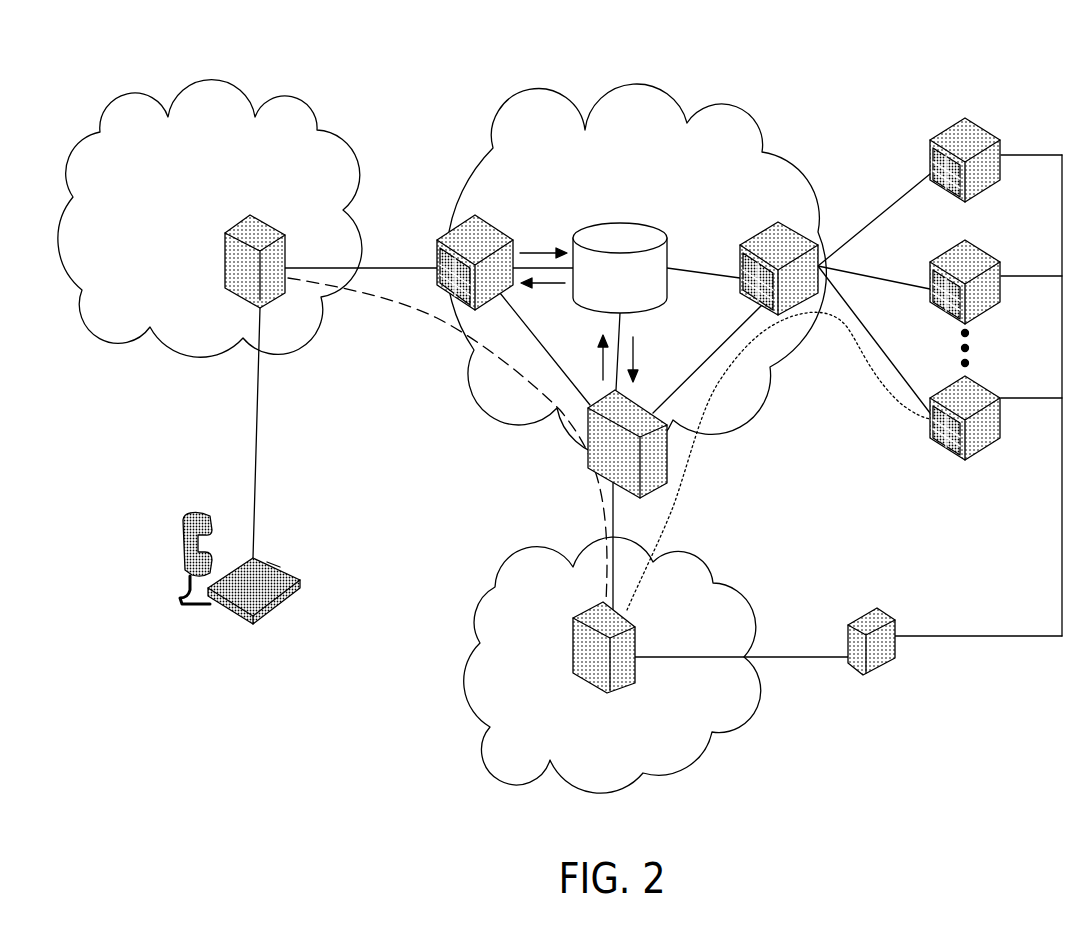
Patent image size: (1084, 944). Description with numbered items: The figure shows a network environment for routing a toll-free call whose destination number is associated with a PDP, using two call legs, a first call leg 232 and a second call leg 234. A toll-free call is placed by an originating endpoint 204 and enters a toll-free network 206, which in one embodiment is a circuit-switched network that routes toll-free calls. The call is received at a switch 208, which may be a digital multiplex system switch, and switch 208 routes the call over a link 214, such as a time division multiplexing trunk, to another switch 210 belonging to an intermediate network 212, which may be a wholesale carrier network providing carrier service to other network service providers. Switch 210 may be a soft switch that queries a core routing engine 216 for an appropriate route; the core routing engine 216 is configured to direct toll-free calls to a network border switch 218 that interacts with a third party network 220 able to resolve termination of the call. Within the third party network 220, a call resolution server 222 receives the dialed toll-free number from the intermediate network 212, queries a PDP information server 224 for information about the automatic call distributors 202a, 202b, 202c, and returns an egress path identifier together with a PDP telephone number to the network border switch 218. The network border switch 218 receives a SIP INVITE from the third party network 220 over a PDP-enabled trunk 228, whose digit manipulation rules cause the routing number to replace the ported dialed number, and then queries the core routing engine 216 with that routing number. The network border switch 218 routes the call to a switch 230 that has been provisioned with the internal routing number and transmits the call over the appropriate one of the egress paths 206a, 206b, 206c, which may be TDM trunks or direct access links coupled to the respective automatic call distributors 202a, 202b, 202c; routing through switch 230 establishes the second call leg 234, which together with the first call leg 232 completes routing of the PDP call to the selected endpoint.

The automatic call distributor 202a is at (952, 121).
The automatic call distributor 202b is at (1001, 252).
The automatic call distributor 202c is at (1001, 397).
The originating endpoint 204 is at (253, 624).
The toll-free network 206 is at (194, 199).
The egress path 206a is at (887, 203).
The egress path 206b is at (871, 274).
The egress path 206c is at (891, 358).
The switch 208 is at (223, 250).
The switch 210 is at (453, 220).
The intermediate network 212 is at (614, 210).
The link 214 is at (404, 268).
The core routing engine 216 is at (604, 309).
The network border switch 218 is at (667, 468).
The third party network 220 is at (596, 769).
The call resolution server 222 is at (573, 653).
The PDP information server 224 is at (893, 610).
The PDP-enabled trunk 228 is at (613, 517).
The switch 230 is at (760, 227).
The first call leg 232 is at (437, 320).
The second call leg 234 is at (862, 348).